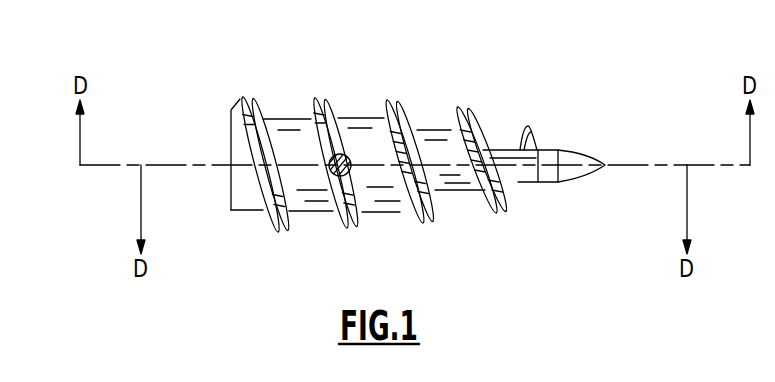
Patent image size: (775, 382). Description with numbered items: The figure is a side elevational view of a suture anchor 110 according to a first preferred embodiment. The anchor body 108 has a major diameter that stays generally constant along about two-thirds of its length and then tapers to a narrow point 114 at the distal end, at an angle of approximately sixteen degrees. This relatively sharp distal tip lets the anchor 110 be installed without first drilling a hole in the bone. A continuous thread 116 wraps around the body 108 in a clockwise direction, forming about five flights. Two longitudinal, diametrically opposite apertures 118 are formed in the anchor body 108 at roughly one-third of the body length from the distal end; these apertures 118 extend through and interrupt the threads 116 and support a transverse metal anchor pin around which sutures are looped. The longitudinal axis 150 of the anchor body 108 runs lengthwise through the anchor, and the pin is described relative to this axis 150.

The anchor body 108 is at (352, 115).
The suture anchor 110 is at (471, 76).
The narrow point 114 is at (602, 165).
The continuous thread 116 is at (424, 222).
The apertures 118 is at (333, 177).
The longitudinal axis 150 is at (176, 165).